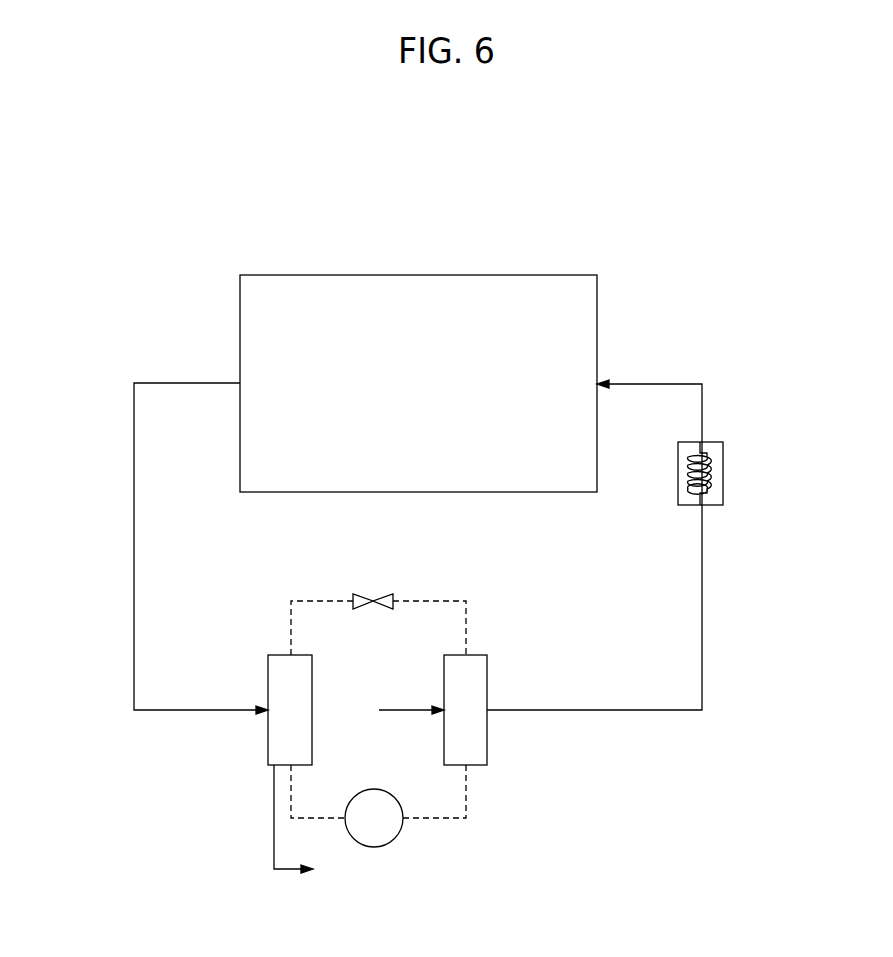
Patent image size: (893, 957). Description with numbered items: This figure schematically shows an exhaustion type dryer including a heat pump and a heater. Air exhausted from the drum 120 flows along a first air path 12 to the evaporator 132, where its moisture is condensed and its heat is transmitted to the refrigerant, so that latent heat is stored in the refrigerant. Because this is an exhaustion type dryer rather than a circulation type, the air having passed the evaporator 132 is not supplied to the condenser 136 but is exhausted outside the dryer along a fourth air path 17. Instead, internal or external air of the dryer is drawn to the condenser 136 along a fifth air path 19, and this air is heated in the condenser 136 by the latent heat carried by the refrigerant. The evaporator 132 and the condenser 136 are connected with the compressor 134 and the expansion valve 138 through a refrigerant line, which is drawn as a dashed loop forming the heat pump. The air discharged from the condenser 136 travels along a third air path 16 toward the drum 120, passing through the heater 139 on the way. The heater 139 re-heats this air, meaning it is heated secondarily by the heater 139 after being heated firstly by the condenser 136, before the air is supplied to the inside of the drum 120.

The drum 120 is at (417, 275).
The first air path 12 is at (134, 613).
The third air path 16 is at (620, 711).
The heater 139 is at (723, 489).
The expansion valve 138 is at (373, 601).
The evaporator 132 is at (268, 748).
The condenser 136 is at (487, 748).
The compressor 134 is at (374, 847).
The fourth air path 17 is at (283, 872).
The fifth air path 19 is at (393, 712).